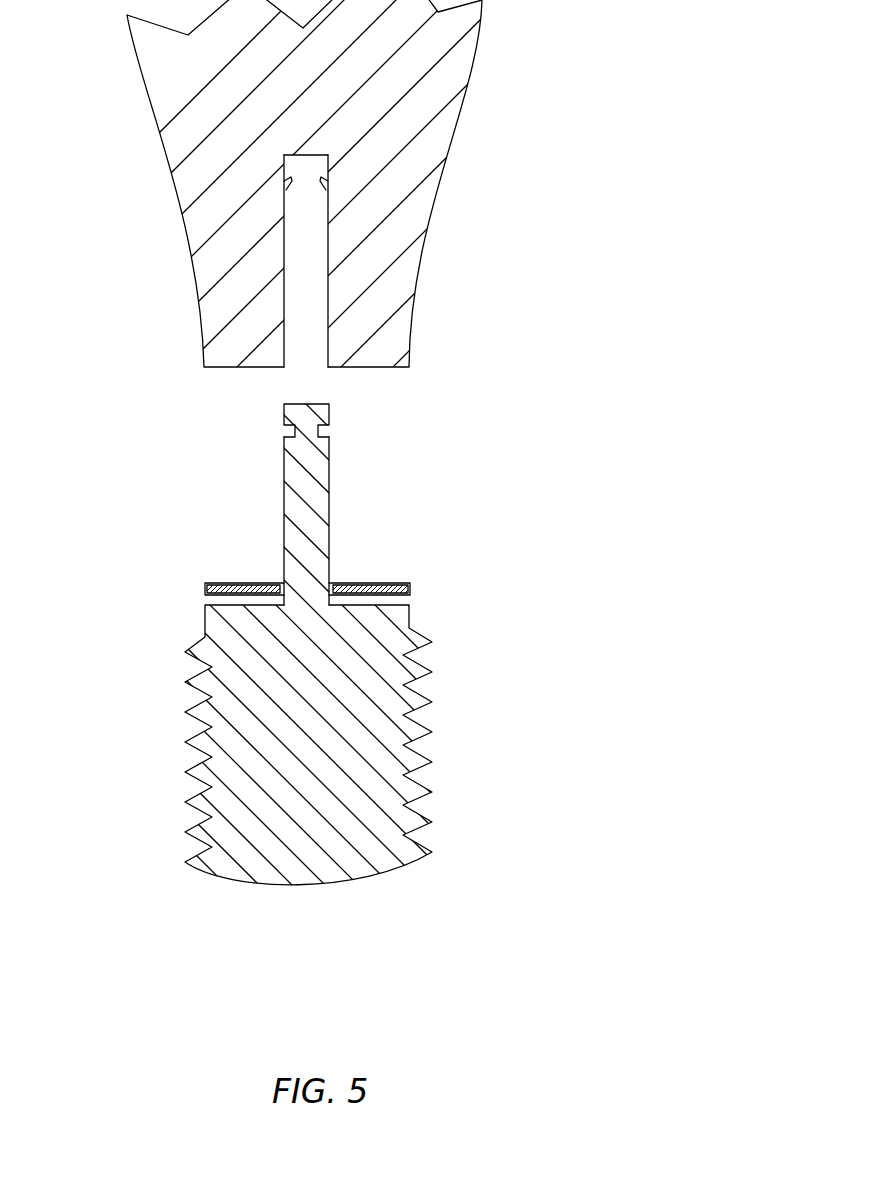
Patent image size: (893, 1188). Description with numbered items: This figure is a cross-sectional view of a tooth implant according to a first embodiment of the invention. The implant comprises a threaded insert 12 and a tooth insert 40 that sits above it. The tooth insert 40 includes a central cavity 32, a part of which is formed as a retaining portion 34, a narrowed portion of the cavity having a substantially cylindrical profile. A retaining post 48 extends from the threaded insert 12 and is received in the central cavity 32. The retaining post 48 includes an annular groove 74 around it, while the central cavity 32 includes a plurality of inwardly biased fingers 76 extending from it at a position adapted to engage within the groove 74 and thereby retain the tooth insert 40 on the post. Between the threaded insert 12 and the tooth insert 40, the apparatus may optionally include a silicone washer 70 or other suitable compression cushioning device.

The threaded insert 12 is at (427, 693).
The central cavity 32 is at (320, 313).
The retaining portion 34 is at (284, 159).
The tooth insert 40 is at (466, 108).
The retaining post 48 is at (330, 487).
The silicone washer 70 is at (403, 583).
The annular groove 74 is at (355, 434).
The inwardly biased fingers 76 is at (285, 187).